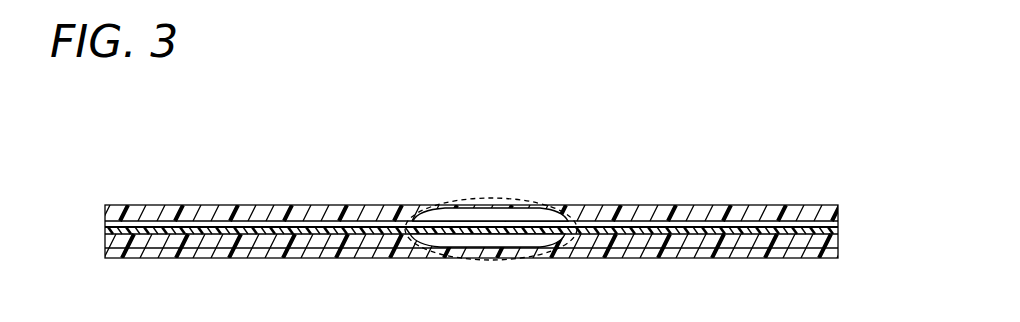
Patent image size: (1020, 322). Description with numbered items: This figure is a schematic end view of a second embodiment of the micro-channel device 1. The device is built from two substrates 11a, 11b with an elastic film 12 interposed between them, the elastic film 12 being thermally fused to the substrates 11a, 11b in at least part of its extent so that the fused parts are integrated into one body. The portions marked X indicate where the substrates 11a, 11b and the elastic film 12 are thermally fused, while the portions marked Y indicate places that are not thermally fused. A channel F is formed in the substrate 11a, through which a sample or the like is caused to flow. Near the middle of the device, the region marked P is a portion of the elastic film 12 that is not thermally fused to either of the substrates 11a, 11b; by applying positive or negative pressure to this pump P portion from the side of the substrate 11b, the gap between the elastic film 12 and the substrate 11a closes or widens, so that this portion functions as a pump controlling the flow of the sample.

The micro-channel device 1 is at (744, 154).
The substrate 11a is at (832, 214).
The substrate 11b is at (830, 250).
The elastic film 12 is at (110, 230).
The channel F is at (283, 224).
The pump portion P is at (517, 198).
The thermally fused portion X is at (122, 212).
The non-thermally-fused portion Y is at (430, 206).